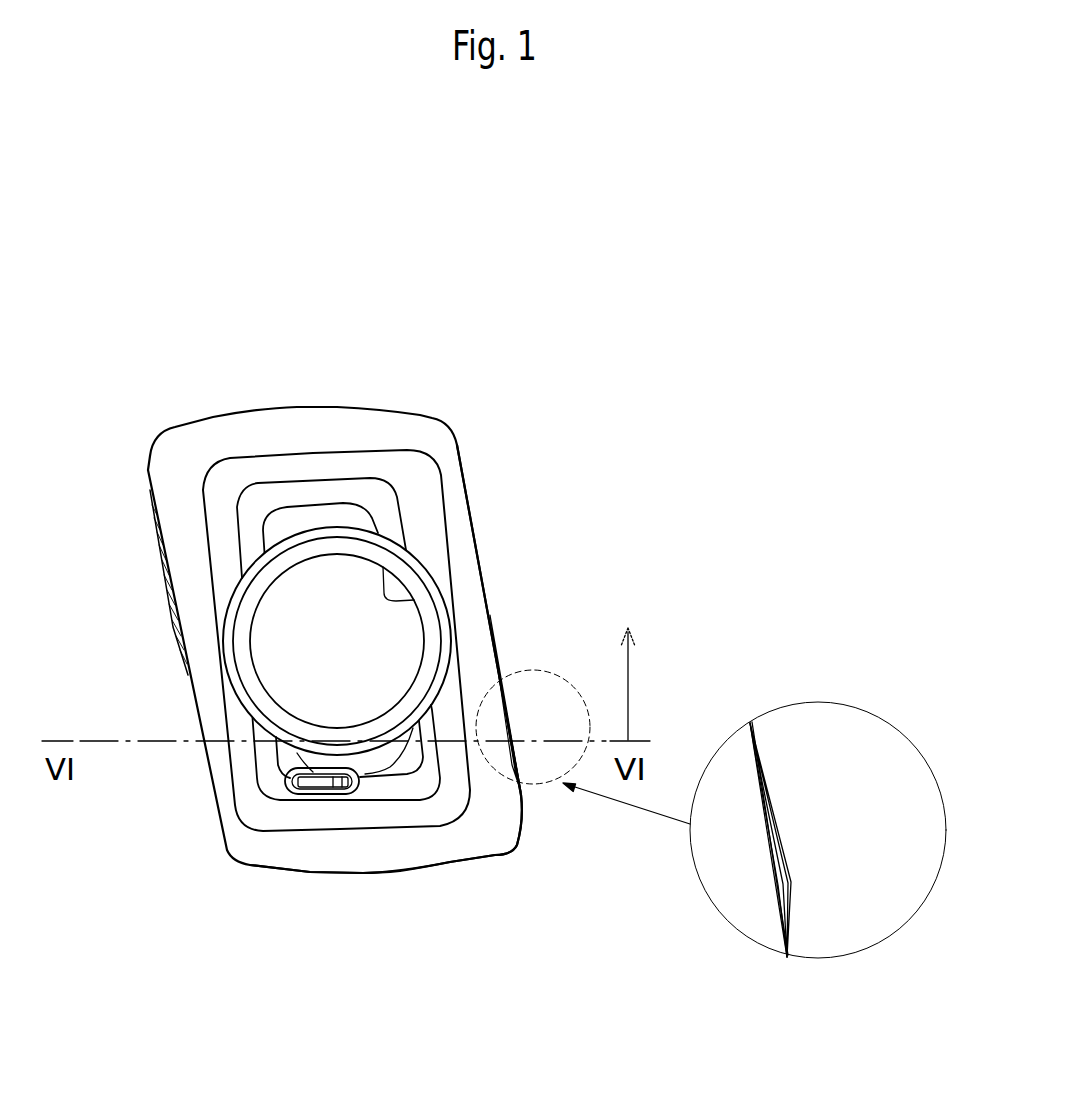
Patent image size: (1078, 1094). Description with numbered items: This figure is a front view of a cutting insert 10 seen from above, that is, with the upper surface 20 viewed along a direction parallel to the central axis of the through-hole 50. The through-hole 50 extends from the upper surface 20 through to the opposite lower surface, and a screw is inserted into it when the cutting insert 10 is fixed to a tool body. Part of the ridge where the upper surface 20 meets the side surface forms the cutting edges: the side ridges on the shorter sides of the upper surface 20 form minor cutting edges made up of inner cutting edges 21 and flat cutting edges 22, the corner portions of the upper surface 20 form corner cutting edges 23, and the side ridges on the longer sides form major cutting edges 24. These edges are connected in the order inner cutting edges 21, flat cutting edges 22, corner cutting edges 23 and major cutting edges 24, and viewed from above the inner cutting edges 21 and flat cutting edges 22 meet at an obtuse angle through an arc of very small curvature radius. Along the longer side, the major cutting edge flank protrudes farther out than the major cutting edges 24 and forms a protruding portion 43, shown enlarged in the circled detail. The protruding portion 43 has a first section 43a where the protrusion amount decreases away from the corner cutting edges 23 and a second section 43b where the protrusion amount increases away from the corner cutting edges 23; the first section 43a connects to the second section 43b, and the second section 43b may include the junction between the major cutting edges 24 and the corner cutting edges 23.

The cutting insert 10 is at (512, 450).
The upper surface 20 is at (420, 492).
The inner cutting edges 21 is at (307, 872).
The flat cutting edges 22 is at (450, 860).
The corner cutting edges 23 is at (524, 830).
The major cutting edges 24 is at (494, 610).
The protruding portion 43 is at (513, 708).
The first section 43a is at (773, 813).
The second section 43b is at (790, 907).
The through-hole 50 is at (410, 600).